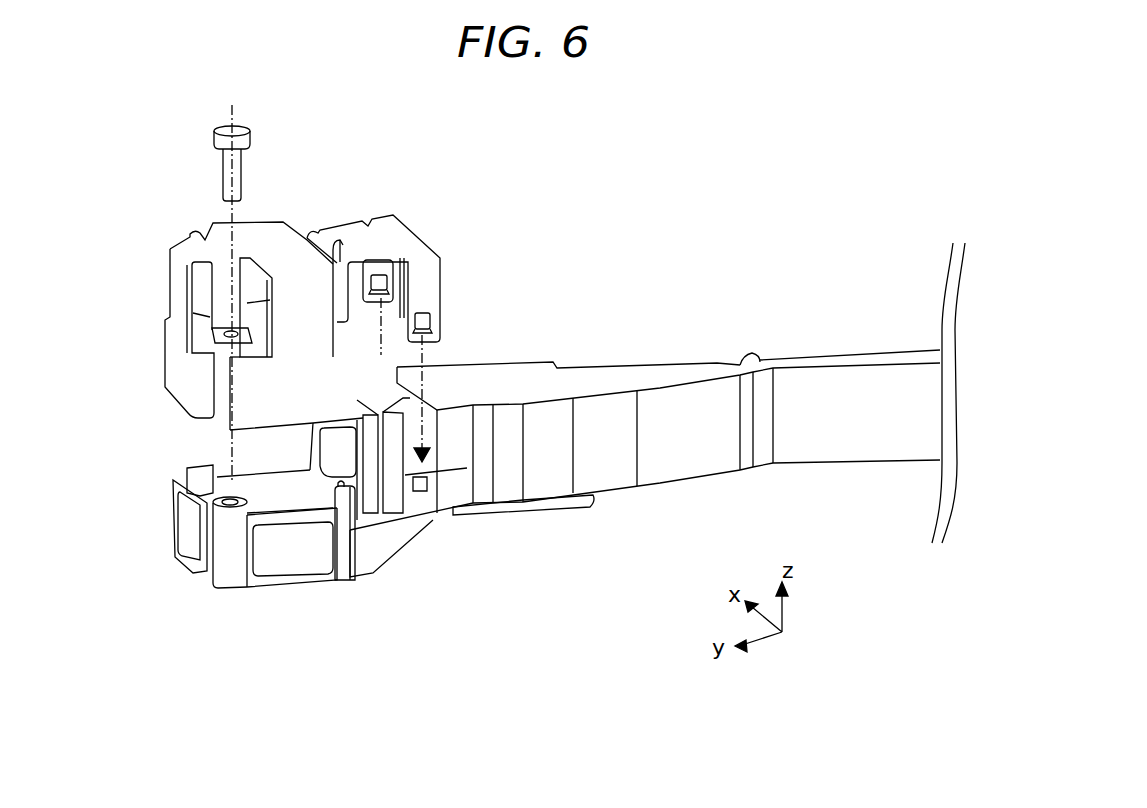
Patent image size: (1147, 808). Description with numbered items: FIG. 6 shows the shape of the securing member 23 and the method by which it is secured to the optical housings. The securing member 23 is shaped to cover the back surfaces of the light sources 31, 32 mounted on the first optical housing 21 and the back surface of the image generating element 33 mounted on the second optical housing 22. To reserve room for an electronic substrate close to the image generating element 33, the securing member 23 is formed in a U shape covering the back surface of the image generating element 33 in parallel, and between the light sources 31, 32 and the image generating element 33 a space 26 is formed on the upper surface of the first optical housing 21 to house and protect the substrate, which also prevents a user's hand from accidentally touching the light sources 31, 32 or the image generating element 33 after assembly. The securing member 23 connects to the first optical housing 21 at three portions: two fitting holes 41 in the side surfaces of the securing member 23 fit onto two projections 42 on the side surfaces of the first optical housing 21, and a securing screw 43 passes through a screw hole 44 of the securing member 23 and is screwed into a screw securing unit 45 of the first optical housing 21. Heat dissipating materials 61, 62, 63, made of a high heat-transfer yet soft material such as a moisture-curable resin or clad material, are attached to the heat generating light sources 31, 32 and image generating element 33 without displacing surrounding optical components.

The first optical housing 21 is at (222, 600).
The second optical housing 22 is at (581, 357).
The securing member 23 is at (315, 220).
The space 26 is at (257, 313).
The light source 31 is at (183, 563).
The light source 32 is at (280, 585).
The image generating element 33 is at (362, 485).
The fitting hole 41 is at (387, 283).
The projection 42 is at (423, 493).
The securing screw 43 is at (225, 172).
The screw hole 44 is at (233, 332).
The screw securing unit 45 is at (227, 497).
The heat dissipating material 61 is at (185, 535).
The heat dissipating material 62 is at (300, 560).
The heat dissipating material 63 is at (340, 452).